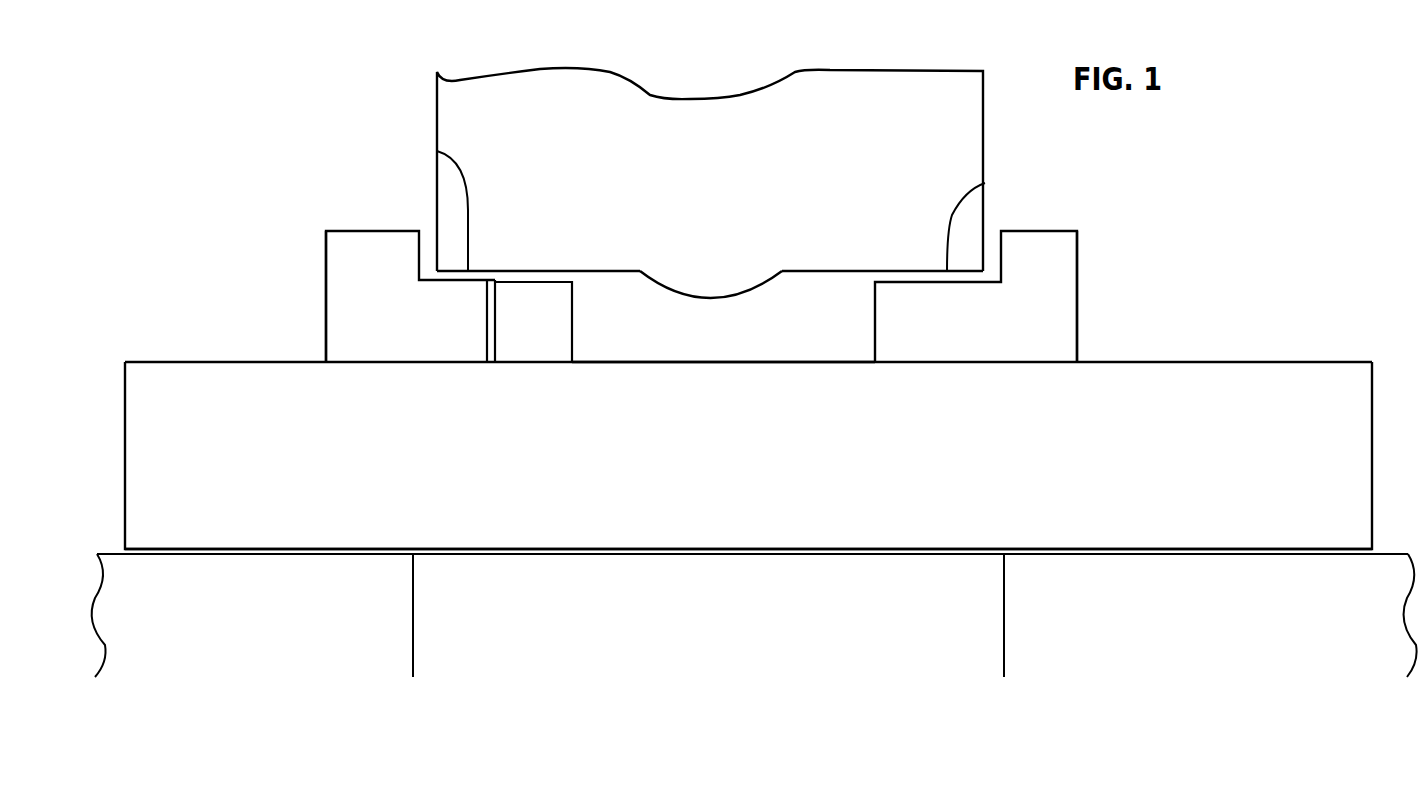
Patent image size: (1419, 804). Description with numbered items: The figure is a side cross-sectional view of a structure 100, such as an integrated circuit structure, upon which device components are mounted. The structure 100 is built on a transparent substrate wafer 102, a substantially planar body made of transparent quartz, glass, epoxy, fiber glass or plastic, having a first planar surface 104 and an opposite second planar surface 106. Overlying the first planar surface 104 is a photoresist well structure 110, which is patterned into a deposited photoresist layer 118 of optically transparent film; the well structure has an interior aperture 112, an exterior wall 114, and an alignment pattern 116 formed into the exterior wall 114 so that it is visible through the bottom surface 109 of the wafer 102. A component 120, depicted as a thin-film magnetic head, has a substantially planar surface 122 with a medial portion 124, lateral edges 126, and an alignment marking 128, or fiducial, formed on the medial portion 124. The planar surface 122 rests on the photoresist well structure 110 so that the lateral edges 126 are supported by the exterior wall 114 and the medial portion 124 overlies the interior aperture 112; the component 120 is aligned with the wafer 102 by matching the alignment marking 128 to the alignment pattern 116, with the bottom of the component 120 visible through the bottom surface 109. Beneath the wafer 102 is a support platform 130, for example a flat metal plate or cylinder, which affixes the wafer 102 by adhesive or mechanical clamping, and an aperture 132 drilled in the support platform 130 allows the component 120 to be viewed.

The structure 100 is at (1207, 163).
The transparent substrate wafer 102 is at (1257, 362).
The first planar surface 104 is at (1100, 362).
The second planar surface 106 is at (1188, 545).
The bottom surface 109 is at (678, 548).
The photoresist well structure 110 is at (1077, 253).
The interior aperture 112 is at (605, 335).
The exterior wall 114 is at (326, 306).
The alignment pattern 116 is at (493, 345).
The photoresist layer 118 is at (367, 263).
The component 120 is at (437, 130).
The substantially planar surface 122 is at (826, 271).
The medial portion 124 is at (603, 271).
The lateral edges 126 is at (437, 151).
The alignment marking 128 is at (688, 290).
The support platform 130 is at (352, 597).
The aperture 132 is at (1057, 650).